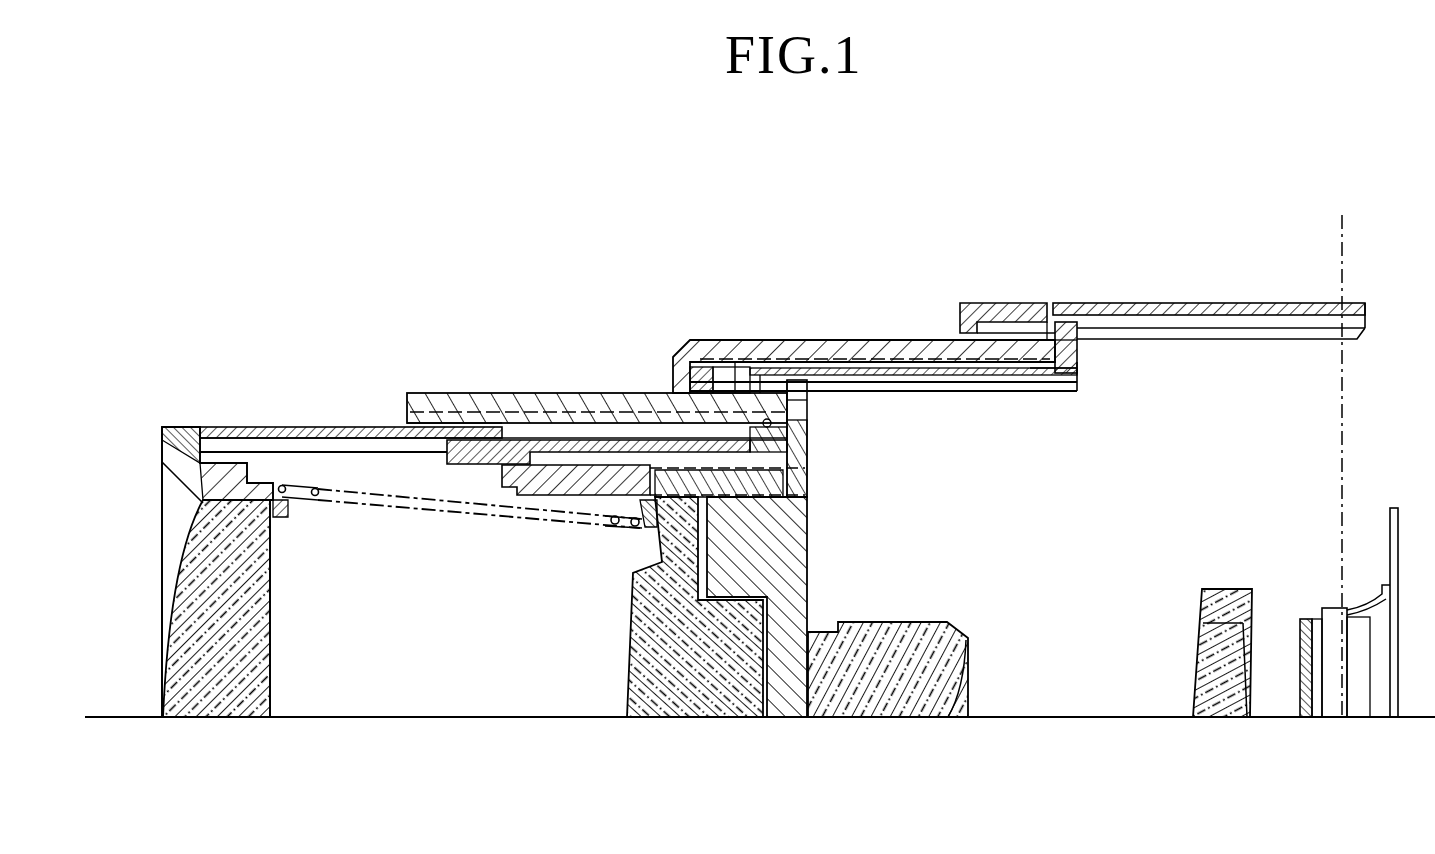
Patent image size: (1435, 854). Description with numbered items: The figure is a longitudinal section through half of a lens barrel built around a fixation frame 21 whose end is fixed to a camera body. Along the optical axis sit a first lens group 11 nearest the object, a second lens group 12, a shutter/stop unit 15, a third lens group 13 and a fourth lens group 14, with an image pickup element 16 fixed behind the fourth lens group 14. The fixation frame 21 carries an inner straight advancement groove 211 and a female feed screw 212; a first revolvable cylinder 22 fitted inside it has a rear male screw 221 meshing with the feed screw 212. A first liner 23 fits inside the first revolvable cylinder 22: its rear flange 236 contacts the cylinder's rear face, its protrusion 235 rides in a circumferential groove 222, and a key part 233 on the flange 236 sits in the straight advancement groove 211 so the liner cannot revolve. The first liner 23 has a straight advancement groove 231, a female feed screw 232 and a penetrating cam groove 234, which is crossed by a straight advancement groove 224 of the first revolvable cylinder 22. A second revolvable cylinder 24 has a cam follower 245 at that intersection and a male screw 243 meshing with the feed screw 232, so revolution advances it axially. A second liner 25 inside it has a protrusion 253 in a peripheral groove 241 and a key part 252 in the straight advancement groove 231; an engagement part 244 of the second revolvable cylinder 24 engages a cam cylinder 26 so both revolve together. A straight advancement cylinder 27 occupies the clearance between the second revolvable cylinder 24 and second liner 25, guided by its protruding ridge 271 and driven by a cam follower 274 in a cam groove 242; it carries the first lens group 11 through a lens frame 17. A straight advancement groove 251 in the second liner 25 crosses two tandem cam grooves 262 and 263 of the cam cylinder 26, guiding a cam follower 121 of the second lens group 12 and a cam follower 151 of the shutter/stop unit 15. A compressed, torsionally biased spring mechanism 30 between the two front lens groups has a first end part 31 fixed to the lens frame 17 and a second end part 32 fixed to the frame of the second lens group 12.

The first lens group 11 is at (255, 652).
The second lens group 12 is at (640, 660).
The cam follower 121 is at (662, 393).
The third lens group 13 is at (945, 633).
The fourth lens group 14 is at (1208, 648).
The shutter/stop unit 15 is at (785, 578).
The cam follower 151 is at (785, 452).
The image pickup element 16 is at (1335, 608).
The lens frame 17 is at (288, 510).
The fixation frame 21 is at (1255, 303).
The straight advancement groove 211 is at (1220, 329).
The female feed screw 212 is at (1300, 340).
The first revolvable cylinder 22 is at (883, 340).
The male screw 221 is at (1030, 327).
The circumferential groove 222 is at (975, 320).
The straight advancement groove 224 is at (905, 343).
The first liner 23 is at (1082, 385).
The straight advancement groove 231 is at (1012, 378).
The female feed screw 232 is at (975, 392).
The key part 233 is at (1066, 330).
The cam groove 234 is at (725, 380).
The protrusion 235 is at (1050, 372).
The flange 236 is at (1080, 350).
The second revolvable cylinder 24 is at (553, 405).
The groove 241 is at (778, 426).
The cam groove 242 is at (483, 408).
The male screw 243 is at (757, 392).
The engagement part 244 is at (800, 418).
The cam follower 245 is at (737, 374).
The second liner 25 is at (790, 440).
The straight advancement groove 251 is at (550, 480).
The key part 252 is at (797, 392).
The protrusion 253 is at (798, 412).
The cam cylinder 26 is at (520, 493).
The cam groove 262 is at (655, 520).
The cam groove 263 is at (770, 500).
The straight advancement cylinder 27 is at (283, 433).
The protruding ridge 271 is at (310, 447).
The cam follower 274 is at (453, 420).
The spring mechanism 30 is at (343, 488).
The first end part 31 is at (282, 492).
The second end part 32 is at (637, 524).